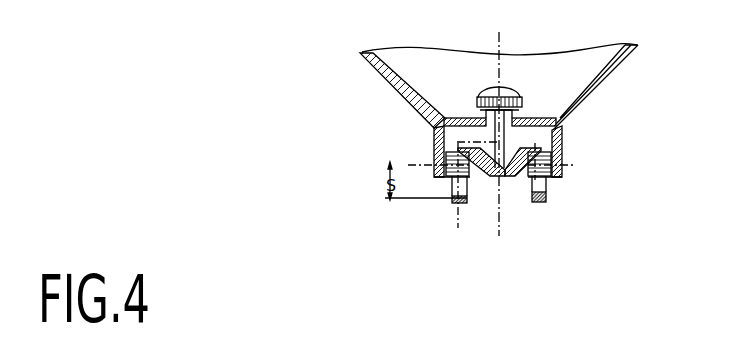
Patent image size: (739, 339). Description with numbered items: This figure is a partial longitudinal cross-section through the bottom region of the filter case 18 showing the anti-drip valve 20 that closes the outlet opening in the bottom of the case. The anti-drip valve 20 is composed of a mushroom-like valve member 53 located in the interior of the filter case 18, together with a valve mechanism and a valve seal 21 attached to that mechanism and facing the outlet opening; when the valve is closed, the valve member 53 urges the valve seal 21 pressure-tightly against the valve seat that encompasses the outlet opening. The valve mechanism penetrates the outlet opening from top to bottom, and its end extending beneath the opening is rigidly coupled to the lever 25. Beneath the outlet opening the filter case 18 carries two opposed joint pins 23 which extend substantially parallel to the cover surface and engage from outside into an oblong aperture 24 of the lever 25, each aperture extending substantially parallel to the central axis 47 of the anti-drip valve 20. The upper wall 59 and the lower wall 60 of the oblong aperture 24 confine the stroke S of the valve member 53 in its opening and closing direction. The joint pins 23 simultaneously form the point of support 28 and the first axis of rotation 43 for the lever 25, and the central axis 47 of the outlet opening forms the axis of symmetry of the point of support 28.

The filter case 18 is at (381, 76).
The anti-drip valve 20 is at (514, 76).
The valve seal 21 is at (484, 112).
The joint pins 23 is at (550, 180).
The oblong aperture 24 is at (452, 204).
The lever 25 is at (497, 197).
The point of support 28 is at (519, 196).
The first axis of rotation 43 is at (412, 165).
The central axis 47 is at (500, 217).
The valve member 53 is at (487, 90).
The upper wall 59 is at (440, 134).
The lower wall 60 is at (548, 197).